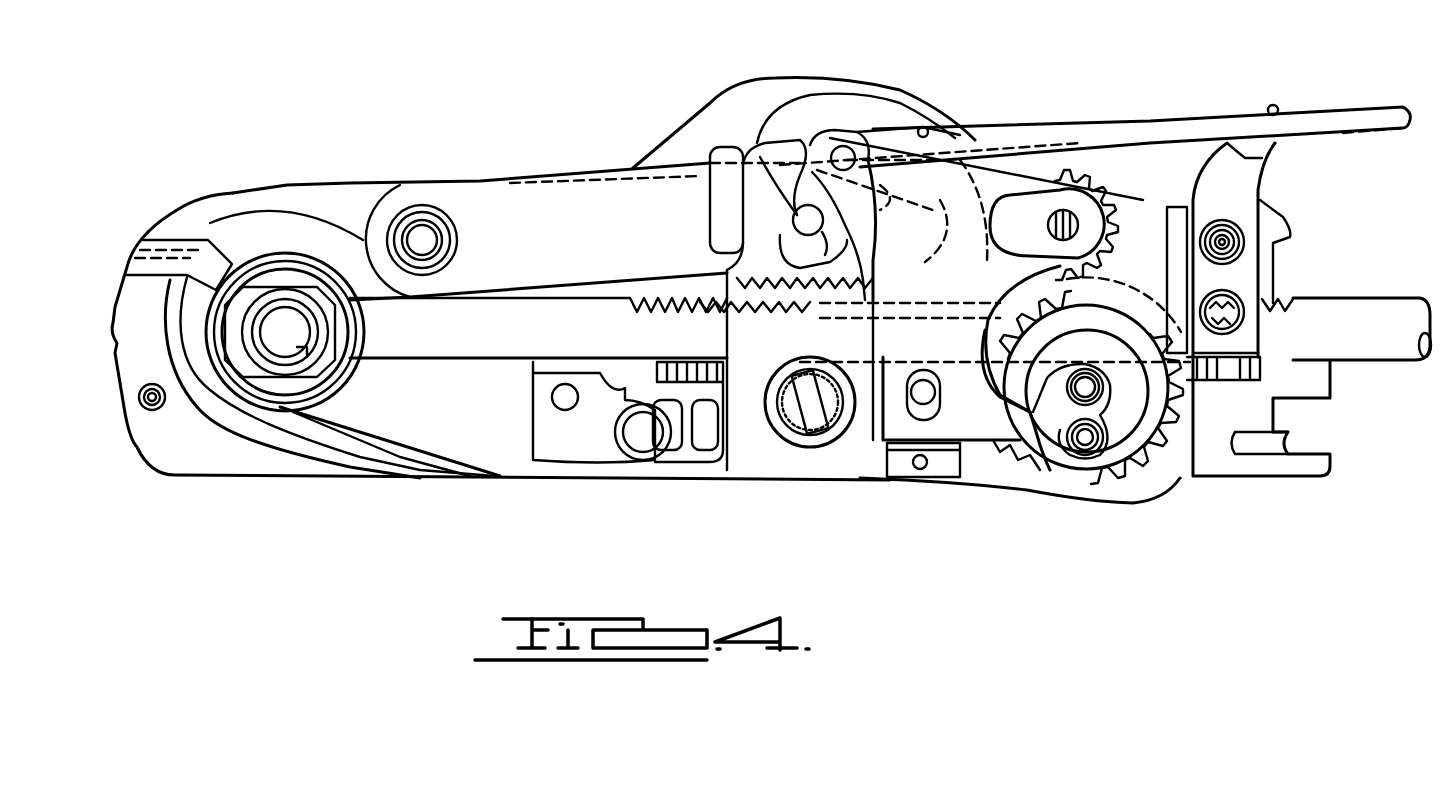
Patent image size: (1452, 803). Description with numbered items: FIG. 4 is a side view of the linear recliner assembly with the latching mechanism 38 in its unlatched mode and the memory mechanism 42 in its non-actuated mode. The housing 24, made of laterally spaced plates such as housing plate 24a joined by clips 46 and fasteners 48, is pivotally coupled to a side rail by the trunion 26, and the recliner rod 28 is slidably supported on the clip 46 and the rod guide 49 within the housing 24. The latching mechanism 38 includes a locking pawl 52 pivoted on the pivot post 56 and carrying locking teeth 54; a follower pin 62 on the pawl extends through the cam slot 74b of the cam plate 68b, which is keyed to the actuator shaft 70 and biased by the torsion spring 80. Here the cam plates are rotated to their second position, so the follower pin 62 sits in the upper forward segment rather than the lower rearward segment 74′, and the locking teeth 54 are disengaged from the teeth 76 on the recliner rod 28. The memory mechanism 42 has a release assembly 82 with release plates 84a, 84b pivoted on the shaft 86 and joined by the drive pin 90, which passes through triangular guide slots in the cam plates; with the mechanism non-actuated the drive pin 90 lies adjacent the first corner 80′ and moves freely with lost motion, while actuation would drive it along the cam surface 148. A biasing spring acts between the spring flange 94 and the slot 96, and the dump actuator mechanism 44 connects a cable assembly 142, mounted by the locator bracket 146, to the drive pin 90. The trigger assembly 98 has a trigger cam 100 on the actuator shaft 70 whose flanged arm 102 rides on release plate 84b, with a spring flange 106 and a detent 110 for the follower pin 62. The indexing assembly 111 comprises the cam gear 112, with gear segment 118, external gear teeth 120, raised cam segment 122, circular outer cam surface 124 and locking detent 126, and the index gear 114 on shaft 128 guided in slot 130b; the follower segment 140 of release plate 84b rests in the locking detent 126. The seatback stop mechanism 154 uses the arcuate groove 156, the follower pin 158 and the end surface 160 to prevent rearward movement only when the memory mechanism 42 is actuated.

The housing 24 is at (226, 466).
The housing plate 24a is at (203, 208).
The trunion 26 is at (282, 320).
The recliner rod 28 is at (1387, 298).
The latching mechanism 38 is at (603, 157).
The memory mechanism 42 is at (980, 130).
The dump actuator mechanism 44 is at (1295, 85).
The clip 46 is at (690, 362).
The fastener 48 is at (152, 407).
The rod guide 49 is at (625, 388).
The locking pawl 52 is at (485, 201).
The locking teeth 54 is at (920, 385).
The pivot post 56 is at (418, 235).
The follower pin 62 is at (793, 222).
The cam plate 68b is at (877, 110).
The actuator shaft 70 is at (783, 402).
The lower rearward segment 74′ is at (1070, 339).
The cam slot 74b is at (822, 292).
The teeth 76 is at (635, 298).
The torsion spring 80 is at (902, 210).
The first corner 80′ is at (946, 231).
The release assembly 82 is at (1063, 210).
The release plate 84a is at (890, 467).
The release plate 84b is at (883, 230).
The shaft 86 is at (933, 380).
The drive pin 90 is at (848, 148).
The spring flange 94 is at (943, 463).
The slot 96 is at (1280, 439).
The trigger assembly 98 is at (798, 473).
The trigger cam 100 is at (710, 190).
The flanged arm 102 is at (800, 150).
The spring flange 106 is at (853, 473).
The detent 110 is at (727, 258).
The indexing assembly 111 is at (1228, 250).
The cam gear 112 is at (1107, 487).
The index gear 114 is at (1087, 163).
The gear segment 118 is at (1247, 342).
The external gear teeth 120 is at (1176, 473).
The raised cam segment 122 is at (1127, 450).
The circular outer cam surface 124 is at (1090, 470).
The locking detent 126 is at (1080, 377).
The shaft 128 is at (1133, 265).
The slot 130b is at (1037, 228).
The follower segment 140 is at (1023, 423).
The cable assembly 142 is at (1198, 112).
The locator bracket 146 is at (1250, 185).
The cam surface 148 is at (1012, 165).
The seatback stop mechanism 154 is at (1113, 430).
The arcuate groove 156 is at (1180, 380).
The follower pin 158 is at (1143, 380).
The end surface 160 is at (1067, 457).